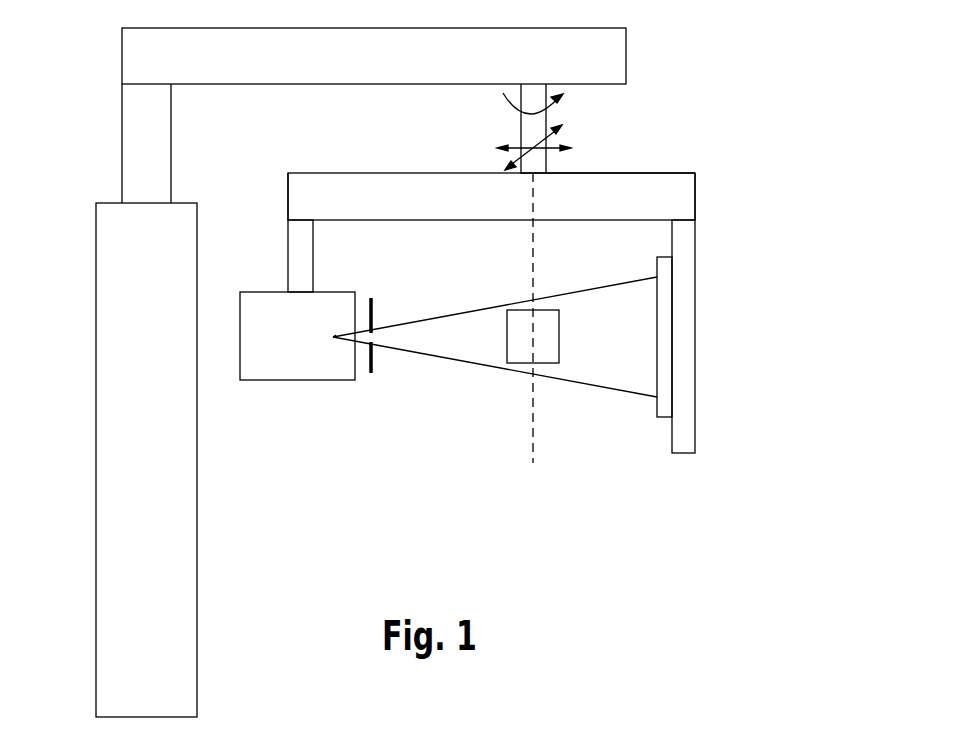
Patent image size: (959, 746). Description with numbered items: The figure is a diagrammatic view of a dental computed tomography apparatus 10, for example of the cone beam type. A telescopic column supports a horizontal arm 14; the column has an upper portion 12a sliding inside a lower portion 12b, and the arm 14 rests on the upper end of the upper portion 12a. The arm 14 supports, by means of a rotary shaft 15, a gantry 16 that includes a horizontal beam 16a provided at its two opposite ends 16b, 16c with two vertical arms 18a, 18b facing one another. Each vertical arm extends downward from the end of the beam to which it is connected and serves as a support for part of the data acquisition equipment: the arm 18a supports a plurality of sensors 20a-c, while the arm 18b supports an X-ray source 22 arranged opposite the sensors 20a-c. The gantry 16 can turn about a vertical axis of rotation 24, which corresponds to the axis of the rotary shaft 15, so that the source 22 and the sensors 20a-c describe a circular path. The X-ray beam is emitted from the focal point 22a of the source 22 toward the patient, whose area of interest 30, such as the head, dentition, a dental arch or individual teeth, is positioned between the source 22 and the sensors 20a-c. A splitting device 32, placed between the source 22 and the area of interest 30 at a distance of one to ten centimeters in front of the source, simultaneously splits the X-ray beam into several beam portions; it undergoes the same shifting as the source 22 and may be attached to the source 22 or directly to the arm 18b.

The computed tomography apparatus 10 is at (700, 140).
The upper portion 12a is at (137, 158).
The lower portion 12b is at (111, 362).
The horizontal arm 14 is at (626, 57).
The rotary shaft 15 is at (547, 120).
The gantry 16 is at (362, 166).
The horizontal beam 16a is at (622, 200).
The end of the beam 16b is at (695, 197).
The end of the beam 16c is at (288, 197).
The vertical arm 18a is at (695, 316).
The vertical arm 18b is at (290, 257).
The sensors 20a-c is at (660, 403).
The X-ray source 22 is at (277, 350).
The focal point 22a is at (333, 340).
The axis of rotation 24 is at (521, 131).
The area of interest 30 is at (515, 338).
The splitting device 32 is at (377, 362).